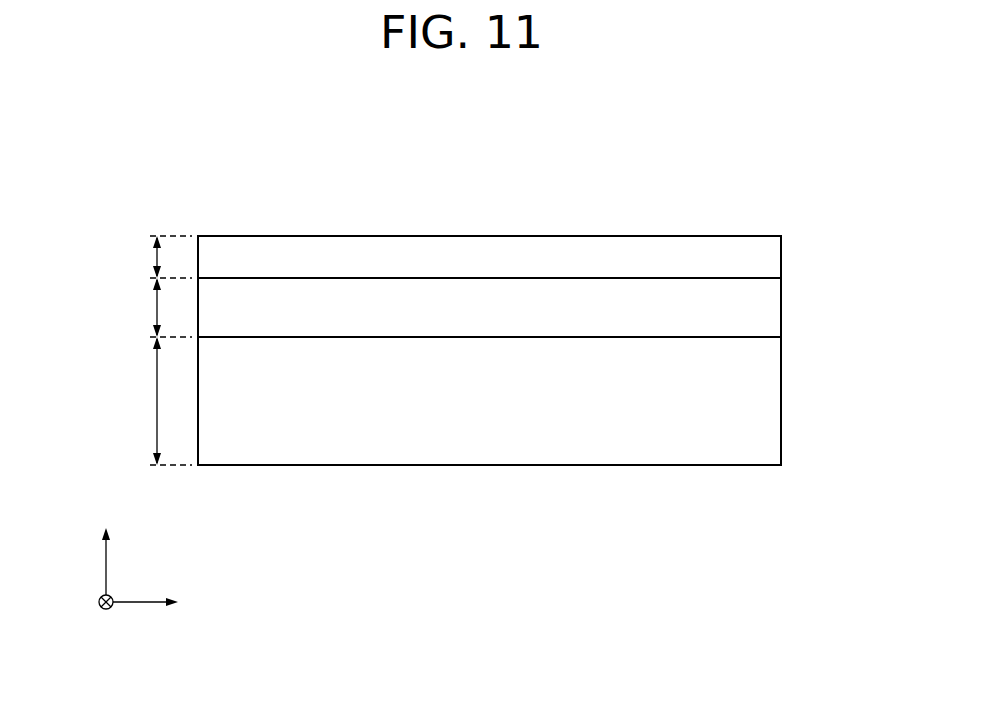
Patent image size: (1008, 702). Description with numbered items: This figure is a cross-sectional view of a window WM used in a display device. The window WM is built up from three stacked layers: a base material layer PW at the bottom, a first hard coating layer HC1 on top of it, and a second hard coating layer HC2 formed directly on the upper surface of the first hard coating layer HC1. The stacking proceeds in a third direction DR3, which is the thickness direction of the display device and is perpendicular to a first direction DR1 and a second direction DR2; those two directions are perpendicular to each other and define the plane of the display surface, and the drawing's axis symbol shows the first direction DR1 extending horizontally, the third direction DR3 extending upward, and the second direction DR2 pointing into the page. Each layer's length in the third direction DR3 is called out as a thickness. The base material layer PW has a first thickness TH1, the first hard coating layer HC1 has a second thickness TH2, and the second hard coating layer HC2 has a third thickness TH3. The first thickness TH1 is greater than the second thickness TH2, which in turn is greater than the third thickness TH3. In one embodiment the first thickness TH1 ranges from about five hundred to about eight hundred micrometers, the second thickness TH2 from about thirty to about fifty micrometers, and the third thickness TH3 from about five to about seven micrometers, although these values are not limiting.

The window WM is at (738, 170).
The second hard coating layer HC2 is at (770, 257).
The first hard coating layer HC1 is at (770, 311).
The base material layer PW is at (770, 408).
The third thickness TH3 is at (136, 257).
The second thickness TH2 is at (136, 307).
The first thickness TH1 is at (136, 401).
The first direction DR1 is at (166, 603).
The second direction DR2 is at (105, 617).
The third direction DR3 is at (105, 550).